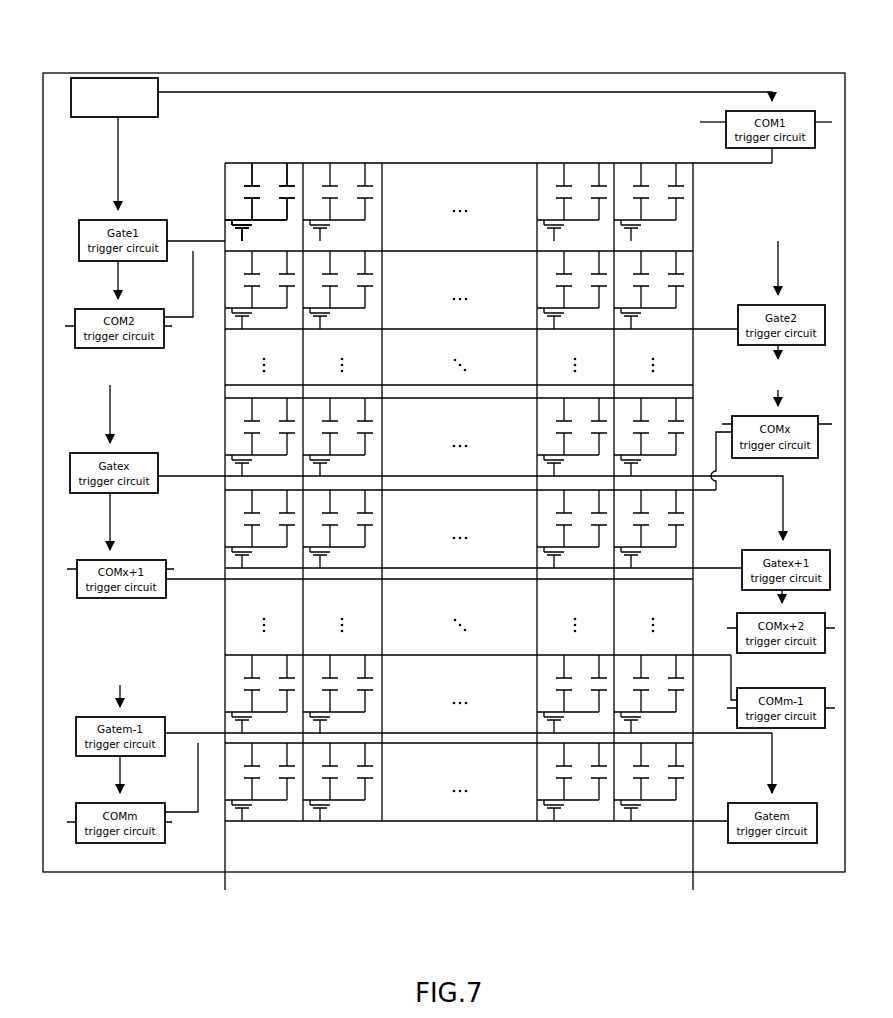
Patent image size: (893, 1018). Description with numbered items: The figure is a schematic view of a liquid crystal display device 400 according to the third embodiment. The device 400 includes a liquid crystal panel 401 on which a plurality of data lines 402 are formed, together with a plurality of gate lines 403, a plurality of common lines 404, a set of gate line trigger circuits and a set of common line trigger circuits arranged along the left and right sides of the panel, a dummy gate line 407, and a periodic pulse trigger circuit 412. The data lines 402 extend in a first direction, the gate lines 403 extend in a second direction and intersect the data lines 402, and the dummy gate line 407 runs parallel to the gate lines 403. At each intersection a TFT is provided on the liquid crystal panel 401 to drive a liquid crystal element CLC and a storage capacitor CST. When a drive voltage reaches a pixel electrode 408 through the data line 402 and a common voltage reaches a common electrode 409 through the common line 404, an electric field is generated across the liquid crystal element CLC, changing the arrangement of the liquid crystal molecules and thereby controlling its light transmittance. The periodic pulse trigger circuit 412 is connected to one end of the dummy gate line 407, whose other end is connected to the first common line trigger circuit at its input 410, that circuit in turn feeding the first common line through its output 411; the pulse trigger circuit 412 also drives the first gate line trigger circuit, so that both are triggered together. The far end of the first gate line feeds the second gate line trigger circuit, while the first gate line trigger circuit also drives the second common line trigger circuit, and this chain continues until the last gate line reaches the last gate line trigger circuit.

The liquid crystal display device 400 is at (444, 478).
The liquid crystal panel 401 is at (285, 874).
The data line 402 is at (539, 786).
The gate line 403 is at (360, 823).
The common line 404 is at (450, 736).
The dummy gate line 407 is at (448, 91).
The pixel electrode 408 is at (256, 231).
The common electrode 409 is at (260, 192).
The input terminal of COM1 trigger circuit 410 is at (704, 121).
The output terminal of COM1 trigger circuit 411 is at (832, 121).
The periodic pulse trigger circuit 412 is at (141, 83).
The thin film transistor TFT is at (243, 217).
The liquid crystal element CLC is at (247, 182).
The storage capacitor CST is at (293, 182).